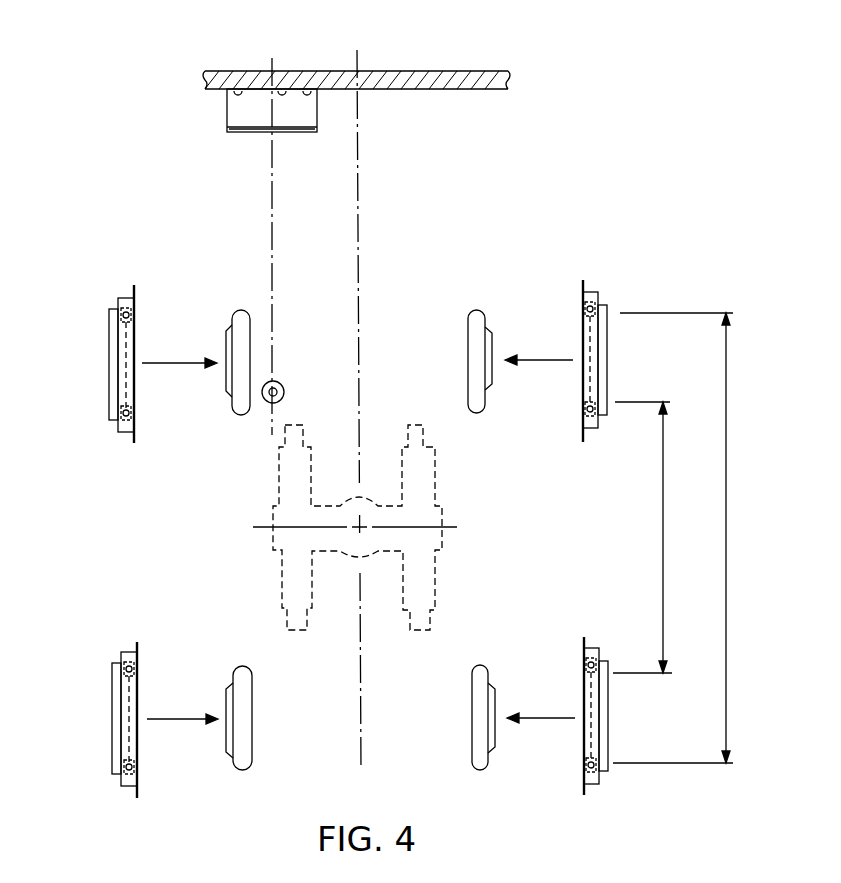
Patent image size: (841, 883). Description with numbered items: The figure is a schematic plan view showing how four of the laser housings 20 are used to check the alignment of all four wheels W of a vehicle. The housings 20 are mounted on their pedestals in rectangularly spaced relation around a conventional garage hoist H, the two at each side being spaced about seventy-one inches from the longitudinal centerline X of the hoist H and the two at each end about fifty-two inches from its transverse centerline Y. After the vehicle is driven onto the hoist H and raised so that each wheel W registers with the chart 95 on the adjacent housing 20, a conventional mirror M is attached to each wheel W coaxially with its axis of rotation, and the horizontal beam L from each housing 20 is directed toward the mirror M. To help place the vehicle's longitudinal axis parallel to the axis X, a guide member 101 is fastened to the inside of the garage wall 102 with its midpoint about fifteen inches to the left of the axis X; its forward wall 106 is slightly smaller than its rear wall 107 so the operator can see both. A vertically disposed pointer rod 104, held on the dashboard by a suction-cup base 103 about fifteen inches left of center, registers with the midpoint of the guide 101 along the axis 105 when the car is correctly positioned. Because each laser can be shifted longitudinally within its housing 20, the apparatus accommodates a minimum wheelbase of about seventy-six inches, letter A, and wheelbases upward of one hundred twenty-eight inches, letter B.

The housing 20 is at (118, 294).
The chart 95 is at (130, 285).
The guide member 101 is at (227, 115).
The garage wall 102 is at (415, 70).
The suction-cup base 103 is at (284, 393).
The pointer rod 104 is at (274, 383).
The axis 105 is at (272, 195).
The forward wall 106 is at (290, 132).
The rear wall 107 is at (283, 96).
The wheel W is at (236, 310).
The mirror M is at (226, 393).
The beam L is at (178, 363).
The longitudinal axis X is at (358, 272).
The transverse centerline Y is at (457, 527).
The hoist H is at (435, 585).
The minimum wheelbase A is at (670, 557).
The maximum wheelbase B is at (732, 584).